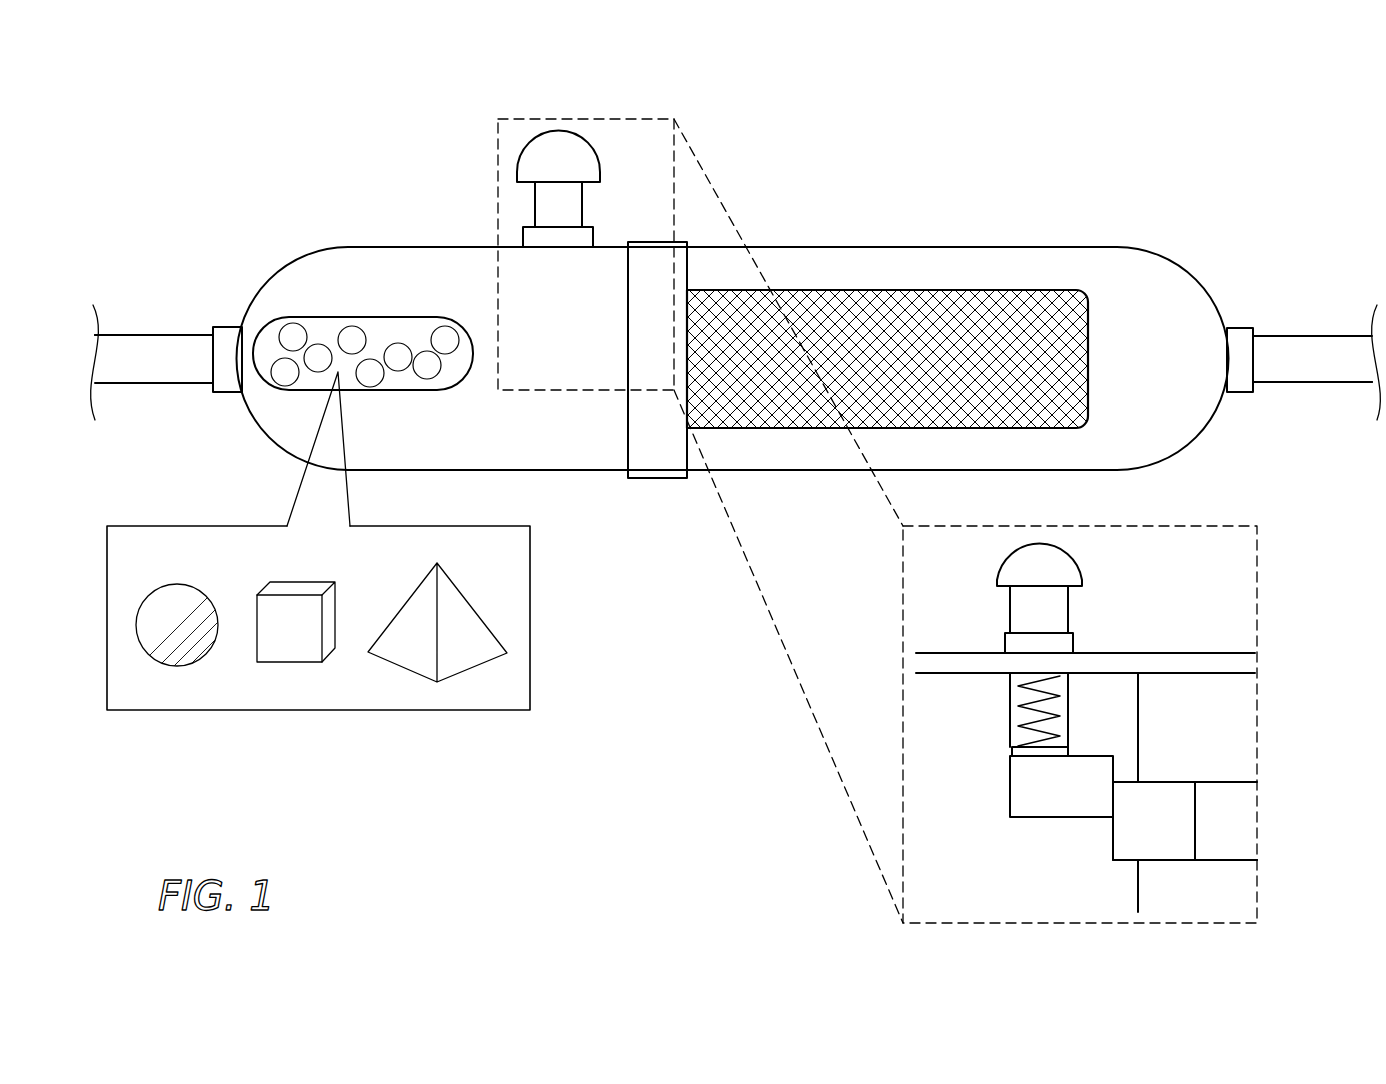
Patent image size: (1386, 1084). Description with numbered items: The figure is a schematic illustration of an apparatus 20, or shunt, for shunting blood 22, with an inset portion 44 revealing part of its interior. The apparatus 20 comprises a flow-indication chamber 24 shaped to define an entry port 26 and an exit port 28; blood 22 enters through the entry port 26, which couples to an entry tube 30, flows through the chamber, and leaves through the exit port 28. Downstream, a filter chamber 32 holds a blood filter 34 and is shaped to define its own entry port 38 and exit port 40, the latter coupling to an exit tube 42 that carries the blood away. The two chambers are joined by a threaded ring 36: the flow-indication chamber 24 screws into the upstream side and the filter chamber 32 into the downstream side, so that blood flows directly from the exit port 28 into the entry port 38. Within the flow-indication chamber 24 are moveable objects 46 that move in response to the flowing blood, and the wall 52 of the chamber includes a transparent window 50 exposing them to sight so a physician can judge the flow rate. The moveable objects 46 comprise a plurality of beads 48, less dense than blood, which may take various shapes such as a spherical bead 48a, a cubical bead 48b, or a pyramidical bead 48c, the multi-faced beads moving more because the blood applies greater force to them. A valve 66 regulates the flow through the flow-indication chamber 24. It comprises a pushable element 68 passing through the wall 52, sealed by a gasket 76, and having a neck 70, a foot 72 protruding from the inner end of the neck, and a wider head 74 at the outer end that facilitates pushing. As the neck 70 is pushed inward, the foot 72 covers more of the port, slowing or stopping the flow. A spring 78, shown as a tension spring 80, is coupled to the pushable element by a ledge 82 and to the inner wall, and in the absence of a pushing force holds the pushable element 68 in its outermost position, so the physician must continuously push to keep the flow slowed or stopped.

The apparatus 20 is at (320, 185).
The blood 22 is at (736, 362).
The flow-indication chamber 24 is at (580, 471).
The entry port 26 is at (238, 327).
The exit port 28 is at (1165, 861).
The entry tube 30 is at (138, 384).
The filter chamber 32 is at (830, 247).
The blood filter 34 is at (1089, 355).
The threaded ring 36 is at (660, 479).
The entry port 38 is at (1240, 782).
The exit port 40 is at (1243, 328).
The exit tube 42 is at (1282, 383).
The inset portion 44 is at (1258, 745).
The moveable objects 46 is at (432, 378).
The beads 48 is at (385, 385).
The spherical bead 48a is at (177, 667).
The cubical bead 48b is at (290, 663).
The pyramidical bead 48c is at (437, 683).
The transparent window 50 is at (316, 317).
The wall 52 is at (918, 653).
The valve 66 is at (515, 205).
The pushable element 68 is at (583, 207).
The neck 70 is at (1010, 605).
The foot 72 is at (1030, 818).
The head 74 is at (558, 132).
The gasket 76 is at (523, 232).
The spring 78 is at (1015, 710).
The tension spring 80 is at (992, 710).
The ledge 82 is at (1036, 757).